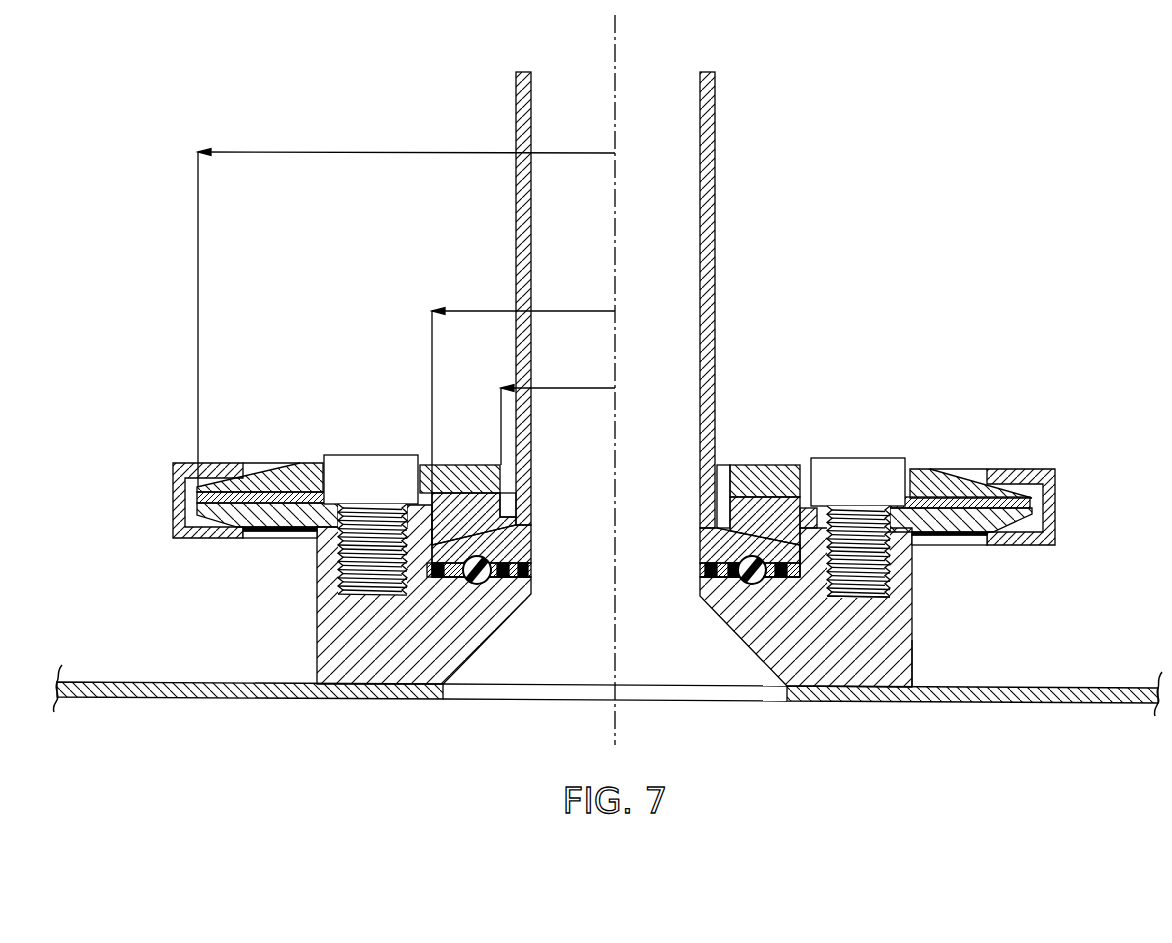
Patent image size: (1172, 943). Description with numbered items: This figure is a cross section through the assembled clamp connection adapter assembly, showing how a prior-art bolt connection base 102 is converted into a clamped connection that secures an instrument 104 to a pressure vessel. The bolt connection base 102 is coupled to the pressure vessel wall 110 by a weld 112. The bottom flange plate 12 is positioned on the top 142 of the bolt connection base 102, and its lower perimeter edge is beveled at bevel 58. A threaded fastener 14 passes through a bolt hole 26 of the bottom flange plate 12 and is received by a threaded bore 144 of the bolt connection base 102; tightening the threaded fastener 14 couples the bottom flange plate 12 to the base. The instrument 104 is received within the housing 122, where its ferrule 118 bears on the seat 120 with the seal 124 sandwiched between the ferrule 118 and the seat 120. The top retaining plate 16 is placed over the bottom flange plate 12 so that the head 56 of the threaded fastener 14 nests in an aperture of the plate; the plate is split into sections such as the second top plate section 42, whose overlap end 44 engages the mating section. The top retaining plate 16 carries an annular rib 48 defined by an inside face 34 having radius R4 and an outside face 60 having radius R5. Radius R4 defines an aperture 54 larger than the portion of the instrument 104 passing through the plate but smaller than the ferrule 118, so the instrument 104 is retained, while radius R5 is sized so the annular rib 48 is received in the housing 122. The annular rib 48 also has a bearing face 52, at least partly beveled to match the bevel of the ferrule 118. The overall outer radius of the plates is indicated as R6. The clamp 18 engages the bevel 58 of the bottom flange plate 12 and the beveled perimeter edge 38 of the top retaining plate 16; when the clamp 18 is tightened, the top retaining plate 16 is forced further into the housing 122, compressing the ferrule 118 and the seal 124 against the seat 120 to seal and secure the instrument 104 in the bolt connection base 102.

The instrument 104 is at (717, 125).
The radius R6 is at (418, 152).
The radius of outside face R5 is at (580, 311).
The radius of inside face R4 is at (572, 388).
The bolt connection base 102 is at (316, 630).
The weld 112 is at (912, 680).
The seat 120 is at (490, 585).
The housing 122 is at (770, 600).
The pressure vessel wall 110 is at (1010, 702).
The top retaining plate 16 is at (459, 508).
The annular rib 48 is at (490, 505).
The inside face 34 is at (505, 517).
The bearing face 52 is at (510, 535).
The aperture 54 is at (722, 470).
The ferrule 118 is at (702, 560).
The top of bolt connection base 142 is at (817, 520).
The seal 124 is at (530, 578).
The second top plate section 42 is at (305, 480).
The overlap end 44 is at (217, 497).
The bottom flange plate 12 is at (225, 518).
The clamp 18 is at (1057, 512).
The beveled perimeter edge 38 is at (1005, 498).
The bevel 58 is at (1013, 532).
The outside face 60 is at (427, 516).
The head 56 is at (887, 468).
The threaded bore 144 is at (337, 572).
The bolt hole 26 is at (337, 517).
The threaded fastener 14 is at (893, 590).